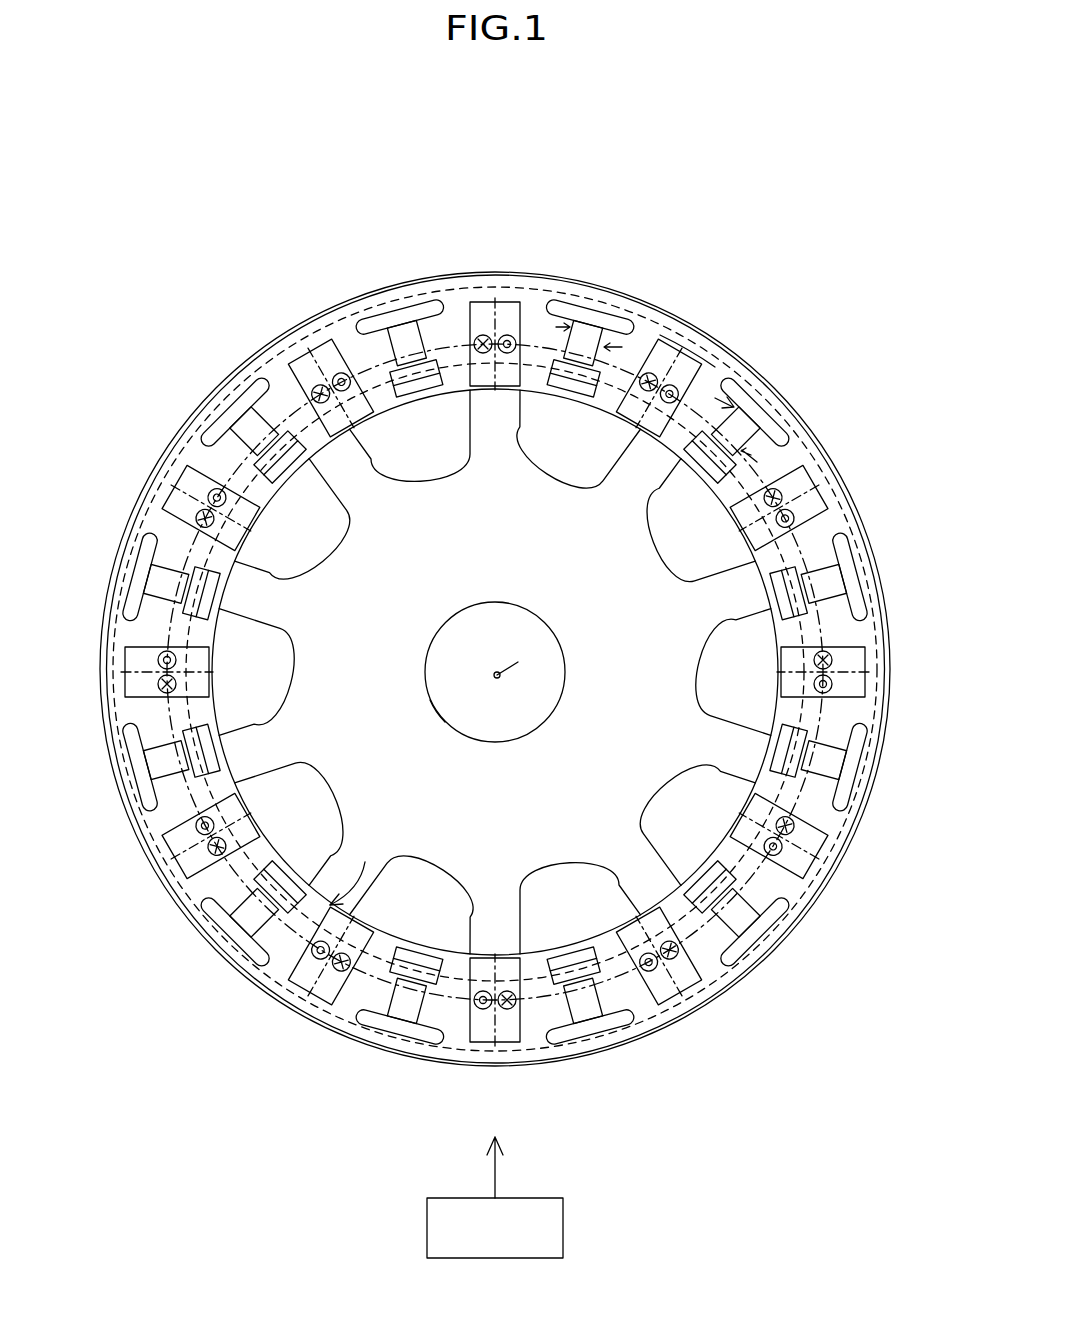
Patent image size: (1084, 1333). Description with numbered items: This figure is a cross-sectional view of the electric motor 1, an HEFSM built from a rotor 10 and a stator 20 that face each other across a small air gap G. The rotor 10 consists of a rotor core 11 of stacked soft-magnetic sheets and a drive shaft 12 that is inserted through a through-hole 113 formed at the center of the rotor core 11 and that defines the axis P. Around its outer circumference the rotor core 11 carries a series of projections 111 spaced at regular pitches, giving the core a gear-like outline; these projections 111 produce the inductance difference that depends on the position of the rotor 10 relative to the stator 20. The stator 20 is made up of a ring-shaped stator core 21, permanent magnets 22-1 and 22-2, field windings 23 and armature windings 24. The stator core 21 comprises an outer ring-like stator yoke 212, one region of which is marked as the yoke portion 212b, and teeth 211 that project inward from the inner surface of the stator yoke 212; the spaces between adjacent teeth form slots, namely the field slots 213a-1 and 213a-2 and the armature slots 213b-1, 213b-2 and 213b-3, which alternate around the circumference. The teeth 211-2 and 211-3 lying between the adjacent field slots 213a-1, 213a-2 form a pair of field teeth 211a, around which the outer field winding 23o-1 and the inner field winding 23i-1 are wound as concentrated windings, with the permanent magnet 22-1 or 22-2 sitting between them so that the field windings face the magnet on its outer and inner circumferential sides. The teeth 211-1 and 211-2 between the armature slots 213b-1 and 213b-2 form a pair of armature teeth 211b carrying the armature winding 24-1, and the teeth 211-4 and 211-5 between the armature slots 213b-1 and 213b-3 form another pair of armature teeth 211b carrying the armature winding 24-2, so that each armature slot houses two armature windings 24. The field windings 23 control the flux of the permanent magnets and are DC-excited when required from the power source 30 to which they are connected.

The electric motor 1 is at (222, 148).
The rotor 10 is at (333, 500).
The rotor core 11 is at (495, 671).
The projections 111 is at (470, 425).
The through-hole 113 is at (437, 712).
The drive shaft 12 is at (497, 742).
The stator 20 is at (362, 297).
The stator core 21 is at (193, 343).
The teeth 211 is at (180, 440).
The tooth 211-1 is at (521, 387).
The tooth 211-2 is at (612, 380).
The tooth 211-3 is at (648, 428).
The tooth 211-4 is at (458, 390).
The tooth 211-5 is at (342, 352).
The pair of field teeth 211a is at (610, 530).
The pair of armature teeth 211b is at (512, 530).
The stator yoke 212 is at (213, 407).
The yoke back portion 212b is at (688, 340).
The field slot 213a-1 is at (607, 312).
The field slot 213a-2 is at (767, 393).
The armature slot 213b-1 is at (469, 306).
The armature slot 213b-2 is at (720, 383).
The armature slot 213b-3 is at (300, 378).
The permanent magnet 22-1 is at (638, 343).
The permanent magnet 22-2 is at (762, 452).
The field windings 23 is at (703, 440).
The inner field winding 23i-1 is at (495, 672).
The outer field winding 23o-1 is at (707, 350).
The armature windings 24 is at (797, 516).
The armature winding 24-1 is at (518, 338).
The armature winding 24-2 is at (457, 357).
The power source 30 is at (563, 1232).